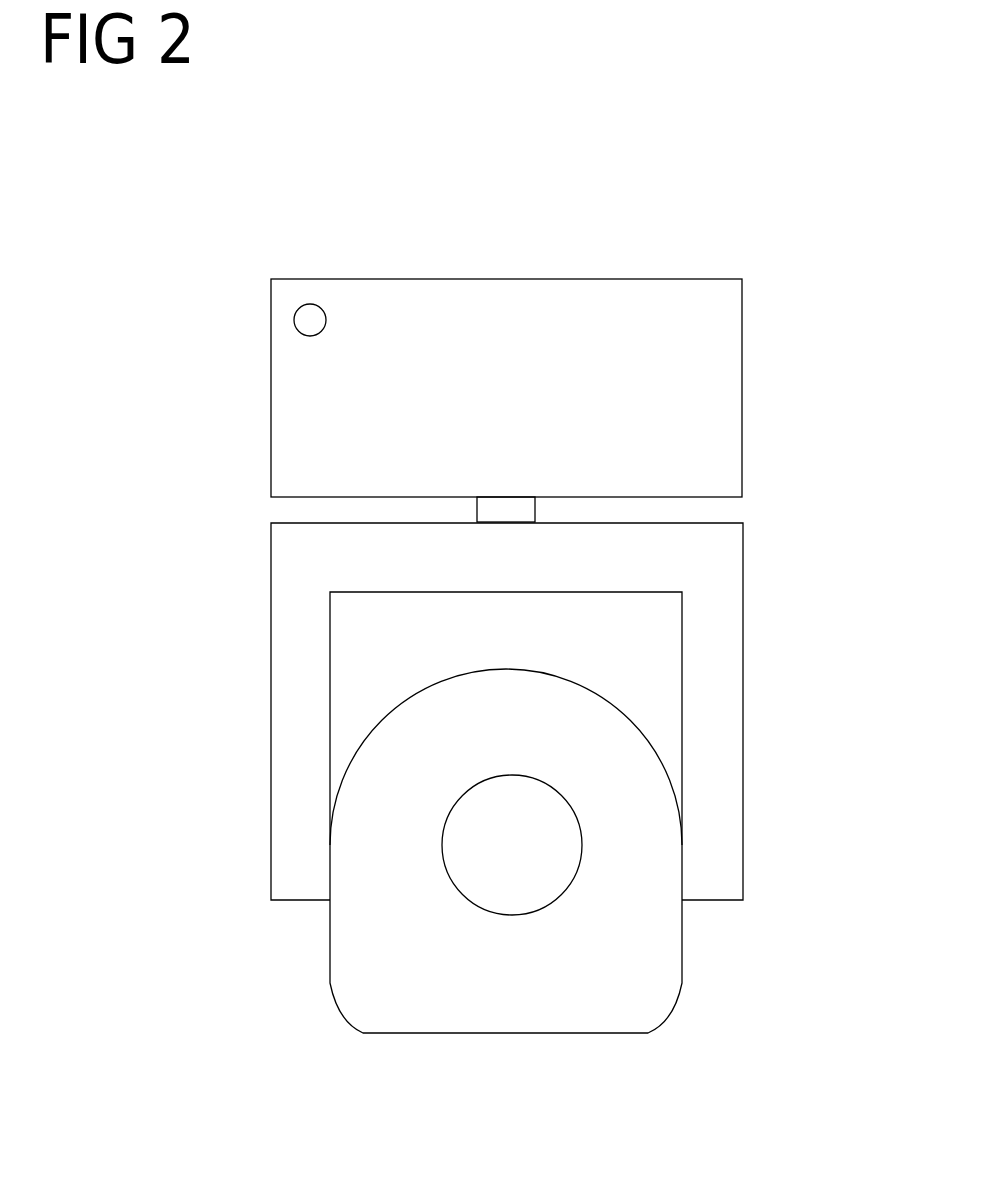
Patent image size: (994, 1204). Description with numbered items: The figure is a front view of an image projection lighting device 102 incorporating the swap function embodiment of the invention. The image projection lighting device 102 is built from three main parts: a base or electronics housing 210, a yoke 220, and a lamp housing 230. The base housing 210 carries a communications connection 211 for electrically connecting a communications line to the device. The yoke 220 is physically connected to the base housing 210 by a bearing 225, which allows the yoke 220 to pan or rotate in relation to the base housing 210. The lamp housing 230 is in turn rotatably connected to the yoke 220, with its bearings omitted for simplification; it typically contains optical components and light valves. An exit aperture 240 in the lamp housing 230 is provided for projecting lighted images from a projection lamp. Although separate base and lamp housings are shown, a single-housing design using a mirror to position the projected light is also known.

The image projection lighting device 102 is at (842, 358).
The base housing 210 is at (338, 263).
The communications connection 211 is at (288, 327).
The yoke 220 is at (247, 725).
The bearing 225 is at (505, 503).
The lamp housing 230 is at (639, 706).
The exit aperture 240 is at (592, 832).